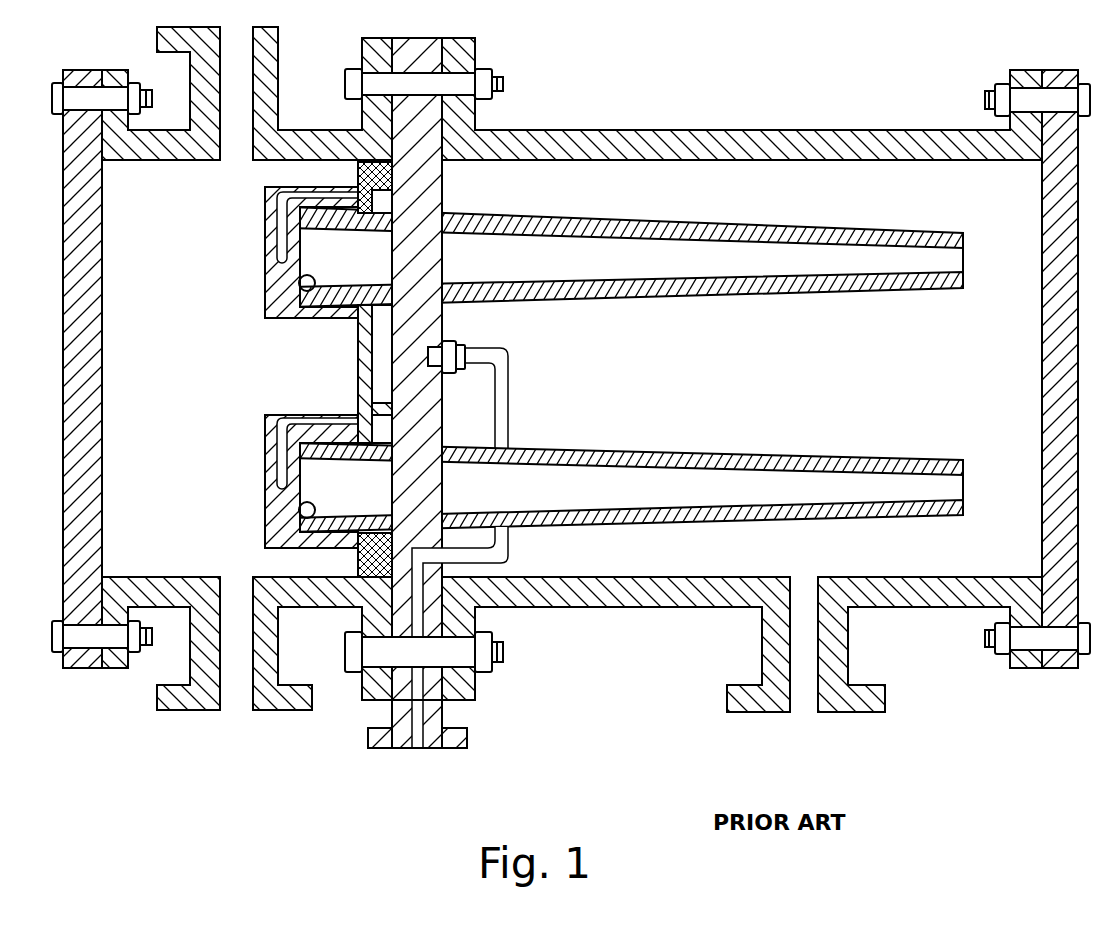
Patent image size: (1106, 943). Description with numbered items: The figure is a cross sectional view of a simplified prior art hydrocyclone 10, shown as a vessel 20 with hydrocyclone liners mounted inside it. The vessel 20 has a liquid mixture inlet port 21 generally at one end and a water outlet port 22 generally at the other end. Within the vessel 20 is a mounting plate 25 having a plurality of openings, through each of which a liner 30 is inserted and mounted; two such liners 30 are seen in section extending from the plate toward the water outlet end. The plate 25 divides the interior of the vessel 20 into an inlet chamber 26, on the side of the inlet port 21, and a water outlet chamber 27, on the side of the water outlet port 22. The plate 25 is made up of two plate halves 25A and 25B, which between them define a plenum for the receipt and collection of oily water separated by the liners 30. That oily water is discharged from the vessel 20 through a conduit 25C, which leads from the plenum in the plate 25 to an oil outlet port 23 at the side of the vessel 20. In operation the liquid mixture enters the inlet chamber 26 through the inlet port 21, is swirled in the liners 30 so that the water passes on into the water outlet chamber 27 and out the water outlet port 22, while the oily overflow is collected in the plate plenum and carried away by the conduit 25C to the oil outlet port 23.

The hydrocyclone 10 is at (703, 92).
The vessel 20 is at (877, 135).
The liquid mixture inlet port 21 is at (232, 712).
The water outlet port 22 is at (800, 714).
The oil outlet port 23 is at (418, 750).
The mounting plate 25 is at (440, 180).
The plate half 25A is at (442, 320).
The plate half 25B is at (358, 377).
The conduit 25C is at (510, 390).
The inlet chamber 26 is at (171, 375).
The water outlet chamber 27 is at (945, 396).
The liner 30 is at (648, 308).